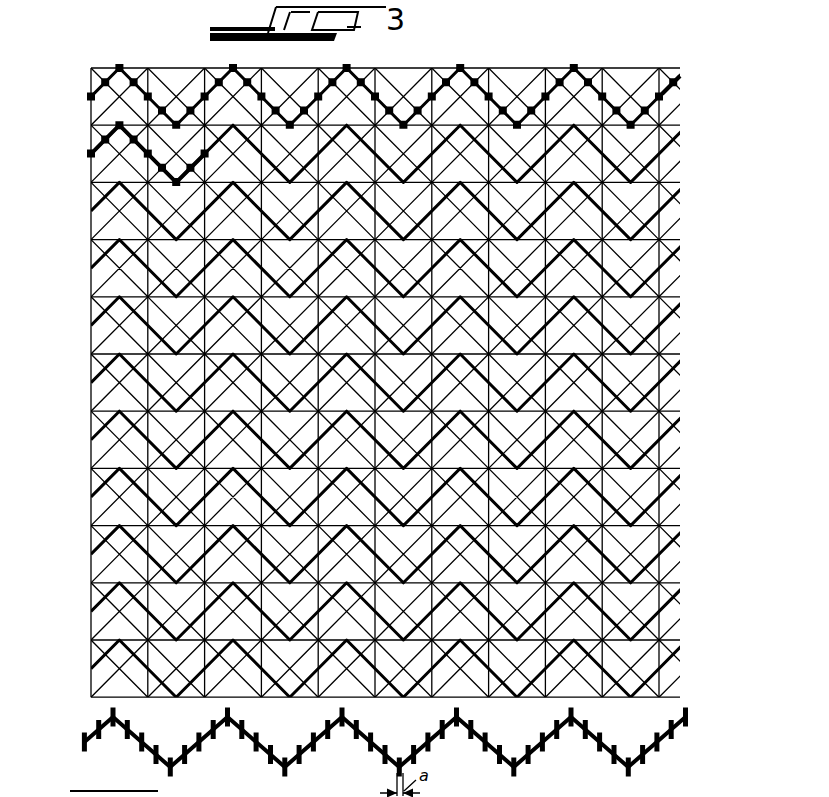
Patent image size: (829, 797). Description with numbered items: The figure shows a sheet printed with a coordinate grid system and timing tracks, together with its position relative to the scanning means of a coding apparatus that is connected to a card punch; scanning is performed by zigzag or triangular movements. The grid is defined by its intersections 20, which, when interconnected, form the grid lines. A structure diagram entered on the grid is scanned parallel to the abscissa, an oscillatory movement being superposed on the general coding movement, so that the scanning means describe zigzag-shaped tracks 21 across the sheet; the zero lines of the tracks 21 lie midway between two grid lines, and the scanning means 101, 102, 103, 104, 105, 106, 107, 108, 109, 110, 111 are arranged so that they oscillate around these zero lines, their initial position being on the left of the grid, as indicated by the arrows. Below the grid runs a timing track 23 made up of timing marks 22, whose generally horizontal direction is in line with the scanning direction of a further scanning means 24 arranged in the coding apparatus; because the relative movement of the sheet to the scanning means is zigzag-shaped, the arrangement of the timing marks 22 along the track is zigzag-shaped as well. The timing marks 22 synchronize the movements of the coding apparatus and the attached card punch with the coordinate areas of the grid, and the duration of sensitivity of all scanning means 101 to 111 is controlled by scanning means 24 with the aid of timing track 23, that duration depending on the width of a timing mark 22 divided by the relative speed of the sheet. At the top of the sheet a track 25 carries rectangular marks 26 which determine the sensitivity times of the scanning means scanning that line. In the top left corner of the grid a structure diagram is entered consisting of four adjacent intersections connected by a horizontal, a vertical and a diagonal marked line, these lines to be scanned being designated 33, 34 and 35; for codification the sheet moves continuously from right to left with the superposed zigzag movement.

The intersections 20 is at (668, 298).
The zigzag-shaped tracks 21 is at (672, 374).
The timing marks 22 is at (250, 737).
The timing track 23 is at (667, 736).
The scanning means 24 is at (67, 742).
The track 25 is at (672, 97).
The rectangular marks 26 is at (577, 68).
The line to be scanned 33 is at (105, 125).
The line to be scanned 34 is at (150, 137).
The line to be scanned 35 is at (100, 173).
The scanning means 101 is at (70, 97).
The scanning means 102 is at (70, 154).
The scanning means 103 is at (70, 211).
The scanning means 104 is at (70, 269).
The scanning means 105 is at (70, 326).
The scanning means 106 is at (70, 383).
The scanning means 107 is at (70, 440).
The scanning means 108 is at (70, 497).
The scanning means 109 is at (70, 555).
The scanning means 110 is at (70, 612).
The scanning means 111 is at (70, 669).